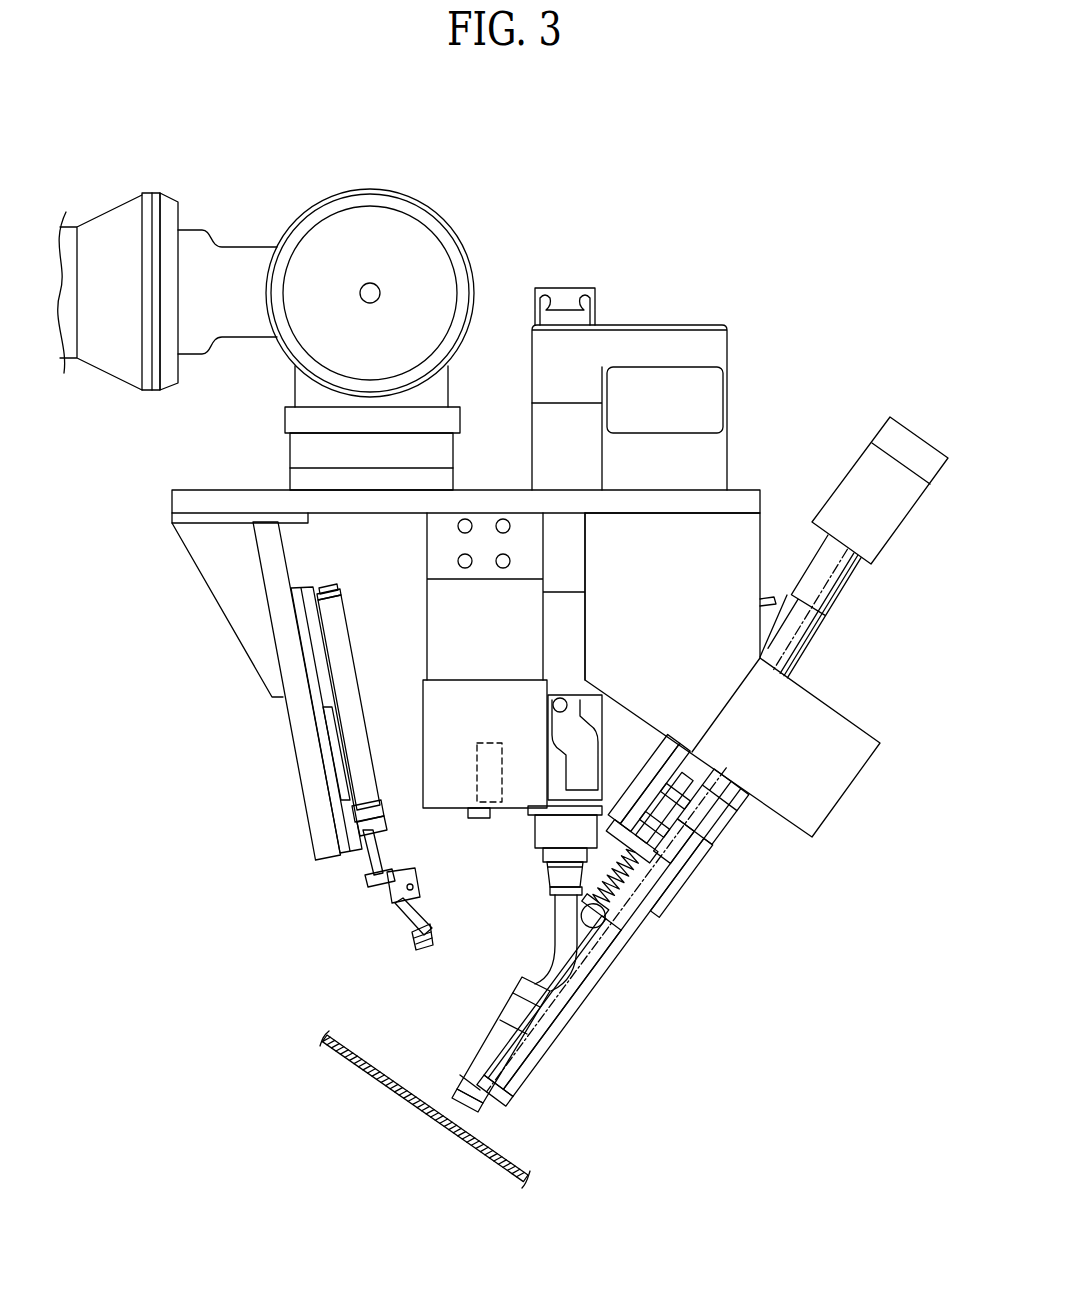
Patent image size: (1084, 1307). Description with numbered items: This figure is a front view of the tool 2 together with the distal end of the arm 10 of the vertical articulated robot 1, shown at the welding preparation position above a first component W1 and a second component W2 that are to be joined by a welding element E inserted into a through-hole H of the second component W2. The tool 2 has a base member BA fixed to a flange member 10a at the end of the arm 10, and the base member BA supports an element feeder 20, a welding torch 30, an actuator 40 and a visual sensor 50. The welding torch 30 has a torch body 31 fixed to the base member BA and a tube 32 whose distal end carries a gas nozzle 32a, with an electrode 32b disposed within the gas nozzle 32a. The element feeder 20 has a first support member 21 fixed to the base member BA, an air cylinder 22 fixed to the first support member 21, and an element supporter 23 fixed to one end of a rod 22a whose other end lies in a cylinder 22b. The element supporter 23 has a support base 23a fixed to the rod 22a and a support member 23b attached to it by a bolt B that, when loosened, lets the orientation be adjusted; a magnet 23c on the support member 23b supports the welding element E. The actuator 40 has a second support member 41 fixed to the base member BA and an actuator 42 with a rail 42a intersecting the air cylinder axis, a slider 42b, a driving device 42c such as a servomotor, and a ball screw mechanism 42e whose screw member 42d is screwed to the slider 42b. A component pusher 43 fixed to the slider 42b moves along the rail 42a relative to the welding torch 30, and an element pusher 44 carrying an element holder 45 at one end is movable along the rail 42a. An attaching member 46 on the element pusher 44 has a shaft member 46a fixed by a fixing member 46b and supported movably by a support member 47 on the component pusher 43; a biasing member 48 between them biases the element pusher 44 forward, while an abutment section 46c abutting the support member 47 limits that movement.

The vertical articulated robot 1 is at (125, 168).
The arm 10 is at (170, 192).
The flange member 10a is at (290, 455).
The tool 2 is at (142, 543).
The base member BA is at (175, 507).
The second support member 41 is at (727, 530).
The actuator 40 is at (806, 442).
The actuator 42 is at (857, 610).
The rail 42a is at (700, 805).
The slider 42b is at (715, 782).
The driving device 42c is at (862, 470).
The screw member 42d is at (862, 578).
The ball screw mechanism 42e is at (805, 675).
The component pusher 43 is at (585, 1008).
The element pusher 44 is at (540, 1050).
The element holder 45 is at (505, 1110).
The attaching member 46 is at (588, 879).
The shaft member 46a is at (668, 870).
The fixing member 46b is at (624, 930).
The abutment section 46c is at (670, 822).
The support member 47 is at (672, 853).
The biasing member 48 is at (665, 905).
The welding torch 30 is at (618, 744).
The torch body 31 is at (528, 813).
The tube 32 is at (547, 950).
The gas nozzle 32a is at (505, 1025).
The electrode 32b is at (472, 1078).
The visual sensor 50 is at (478, 742).
The element feeder 20 is at (308, 910).
The first support member 21 is at (300, 713).
The air cylinder 22 is at (340, 640).
The rod 22a is at (365, 860).
The cylinder 22b is at (360, 707).
The element supporter 23 is at (390, 870).
The support base 23a is at (383, 893).
The support member 23b is at (395, 913).
The magnet 23c is at (432, 945).
The bolt B is at (418, 887).
The welding element E is at (410, 945).
The through-hole H is at (475, 1112).
The first component W1 is at (345, 1053).
The second component W2 is at (530, 1182).